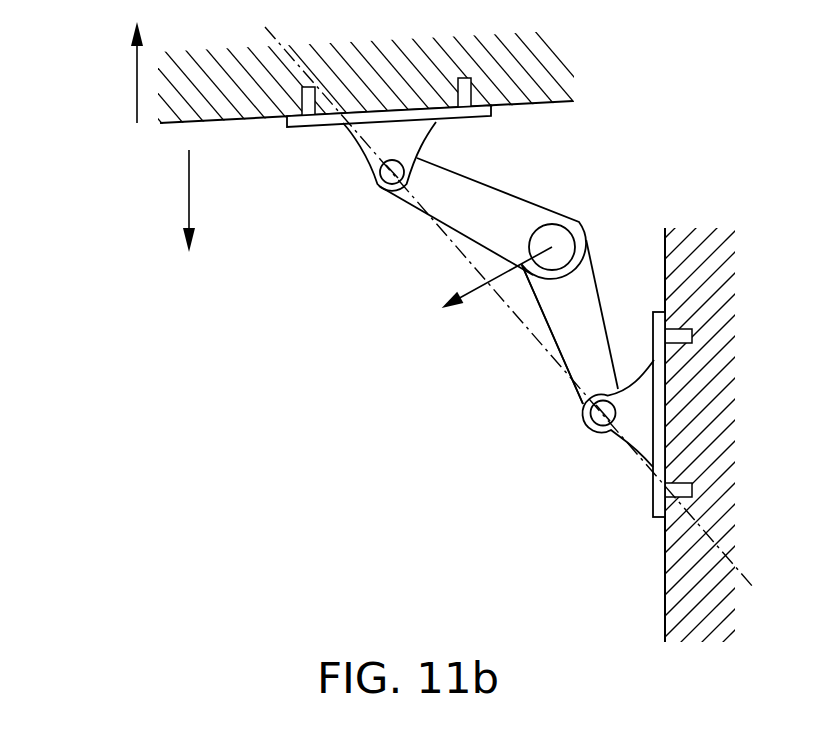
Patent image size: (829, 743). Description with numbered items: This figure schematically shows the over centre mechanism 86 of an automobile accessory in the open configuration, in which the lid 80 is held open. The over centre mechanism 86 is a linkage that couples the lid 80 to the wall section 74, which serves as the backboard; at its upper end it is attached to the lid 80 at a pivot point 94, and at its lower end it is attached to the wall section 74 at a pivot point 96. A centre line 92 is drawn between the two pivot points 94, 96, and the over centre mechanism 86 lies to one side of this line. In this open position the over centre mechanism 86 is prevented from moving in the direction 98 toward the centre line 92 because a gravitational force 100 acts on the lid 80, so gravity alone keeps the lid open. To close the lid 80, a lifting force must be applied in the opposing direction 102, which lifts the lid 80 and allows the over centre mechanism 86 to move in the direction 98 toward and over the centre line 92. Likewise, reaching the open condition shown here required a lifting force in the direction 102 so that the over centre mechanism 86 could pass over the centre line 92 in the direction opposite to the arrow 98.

The wall section 74 is at (664, 559).
The lid 80 is at (537, 102).
The over centre mechanism 86 is at (598, 205).
The centre line 92 is at (533, 334).
The pivot point 94 is at (377, 182).
The pivot point 96 is at (584, 424).
The direction 98 is at (472, 287).
The gravitational force 100 is at (189, 193).
The opposing direction 102 is at (137, 75).